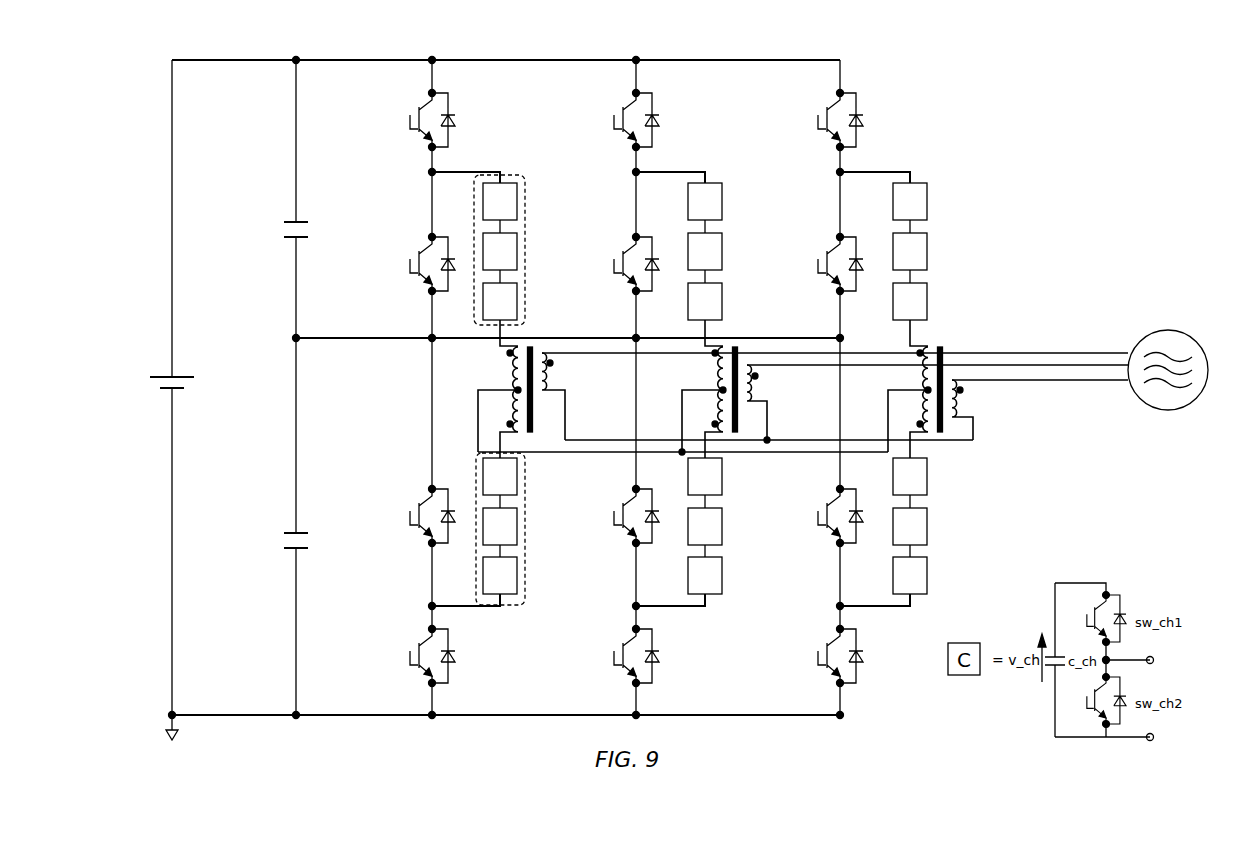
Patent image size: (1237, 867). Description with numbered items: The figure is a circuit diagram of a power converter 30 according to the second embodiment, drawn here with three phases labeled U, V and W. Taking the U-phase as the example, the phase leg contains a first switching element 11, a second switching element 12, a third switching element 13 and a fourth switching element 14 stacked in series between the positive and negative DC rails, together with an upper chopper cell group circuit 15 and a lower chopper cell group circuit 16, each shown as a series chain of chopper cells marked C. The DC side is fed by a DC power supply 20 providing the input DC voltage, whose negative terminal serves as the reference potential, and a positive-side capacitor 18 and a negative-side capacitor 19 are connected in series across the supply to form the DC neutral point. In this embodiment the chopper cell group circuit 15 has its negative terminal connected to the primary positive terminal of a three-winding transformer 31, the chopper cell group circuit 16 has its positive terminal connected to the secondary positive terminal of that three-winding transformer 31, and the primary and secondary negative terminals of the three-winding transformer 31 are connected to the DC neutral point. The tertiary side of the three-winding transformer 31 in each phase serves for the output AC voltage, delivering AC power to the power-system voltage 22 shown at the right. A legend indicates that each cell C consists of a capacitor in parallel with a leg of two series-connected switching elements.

The switching element (sw_u1) 11 is at (410, 120).
The switching element (sw_u2) 12 is at (410, 264).
The switching element (sw_u3) 13 is at (409, 516).
The switching element (sw_u4) 14 is at (410, 656).
The chopper cell group circuit (ch_up) 15 is at (524, 176).
The chopper cell group circuit (ch_un) 16 is at (526, 483).
The capacitor (c_p) 18 is at (308, 230).
The capacitor (c_n) 19 is at (308, 542).
The DC power supply 20 is at (183, 391).
The power-system voltage (v_s) 22 is at (1168, 350).
The power converter 30 is at (1099, 184).
The three-winding transformer (tr3) 31 is at (803, 378).